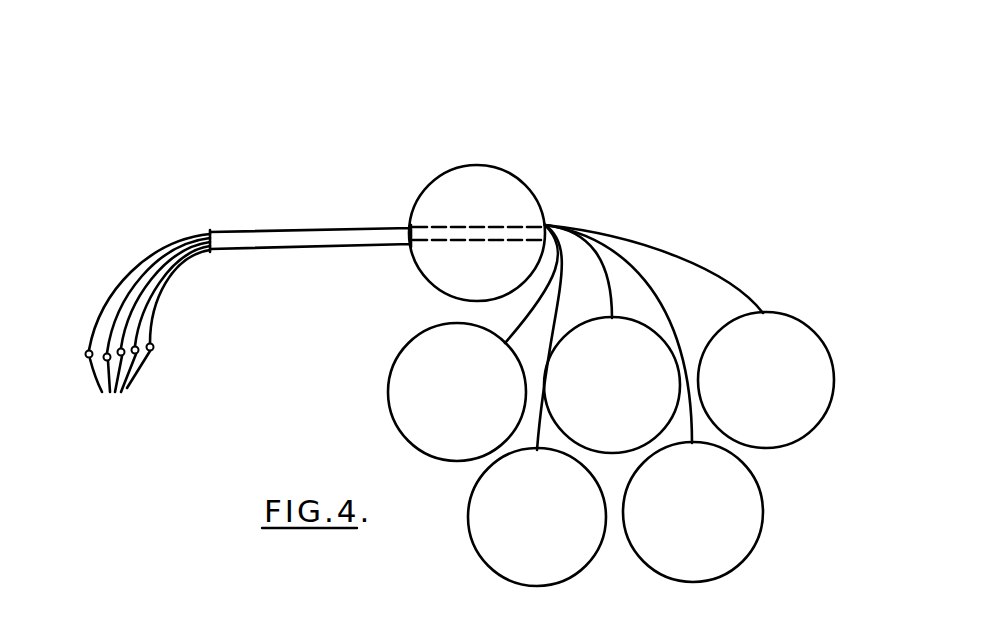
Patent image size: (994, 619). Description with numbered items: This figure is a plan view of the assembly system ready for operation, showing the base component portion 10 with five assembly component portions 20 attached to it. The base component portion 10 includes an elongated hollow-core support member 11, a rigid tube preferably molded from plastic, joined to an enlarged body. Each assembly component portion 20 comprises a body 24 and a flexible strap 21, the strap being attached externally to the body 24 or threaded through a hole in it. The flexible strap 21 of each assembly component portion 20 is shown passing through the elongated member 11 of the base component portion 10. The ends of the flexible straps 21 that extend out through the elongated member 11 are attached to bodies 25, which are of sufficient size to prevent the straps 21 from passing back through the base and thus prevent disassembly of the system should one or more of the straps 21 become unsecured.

The base component portion 10 is at (346, 206).
The elongated hollow-core support member 11 is at (300, 228).
The assembly component portion 20 is at (816, 323).
The flexible strap 21 is at (138, 268).
The body 24 is at (820, 370).
The bodies 25 is at (120, 383).